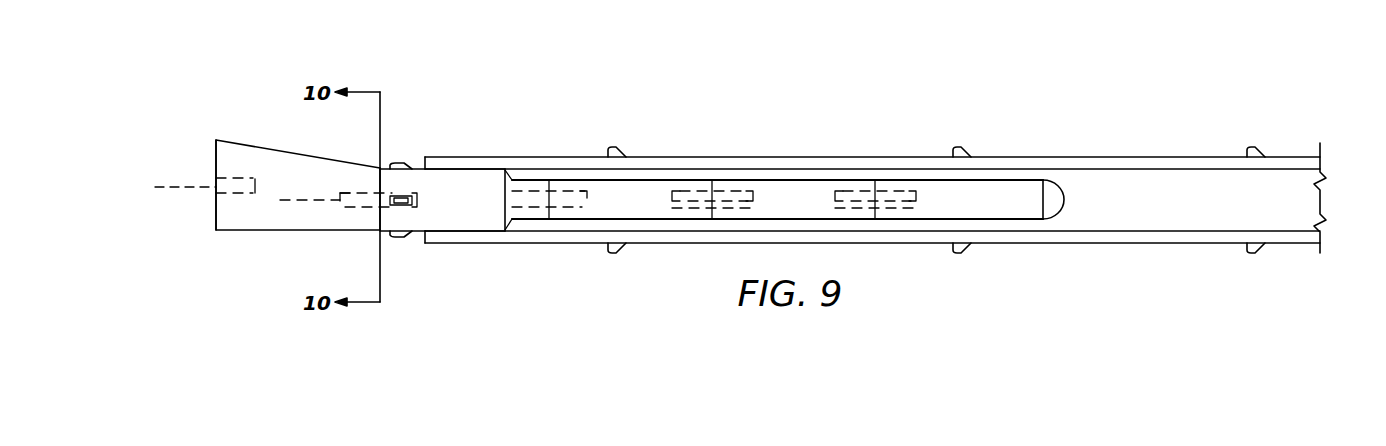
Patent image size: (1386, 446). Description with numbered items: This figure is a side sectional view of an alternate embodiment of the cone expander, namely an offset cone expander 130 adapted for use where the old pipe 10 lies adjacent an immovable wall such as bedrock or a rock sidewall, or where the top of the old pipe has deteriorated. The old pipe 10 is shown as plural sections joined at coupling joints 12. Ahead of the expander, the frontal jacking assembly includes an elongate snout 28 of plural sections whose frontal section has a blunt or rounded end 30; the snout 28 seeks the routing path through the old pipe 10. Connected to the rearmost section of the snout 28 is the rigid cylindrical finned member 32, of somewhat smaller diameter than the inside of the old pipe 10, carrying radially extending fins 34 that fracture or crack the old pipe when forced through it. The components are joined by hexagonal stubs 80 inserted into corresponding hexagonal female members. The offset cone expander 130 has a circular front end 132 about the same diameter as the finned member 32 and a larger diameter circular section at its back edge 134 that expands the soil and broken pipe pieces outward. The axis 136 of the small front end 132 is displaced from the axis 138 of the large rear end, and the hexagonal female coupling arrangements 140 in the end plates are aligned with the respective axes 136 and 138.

The old pipe 10 is at (790, 157).
The coupling joints 12 is at (960, 157).
The snout 28 is at (675, 226).
The rounded end 30 is at (1064, 203).
The finned member 32 is at (452, 210).
The fins 34 is at (397, 168).
The hexagonal stub 80 is at (588, 207).
The offset cone expander 130 is at (270, 104).
The circular front end 132 is at (378, 168).
The back edge 134 is at (216, 158).
The axis of the frontal end 136 is at (293, 202).
The axis of the rear end 138 is at (165, 189).
The hexagonal female coupling arrangements 140 is at (247, 196).